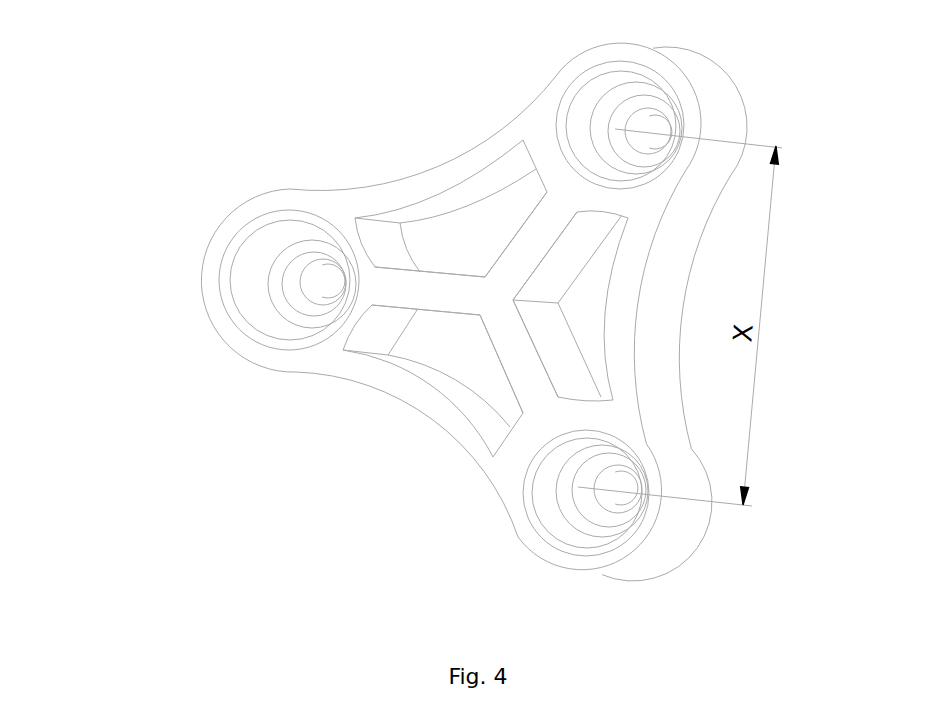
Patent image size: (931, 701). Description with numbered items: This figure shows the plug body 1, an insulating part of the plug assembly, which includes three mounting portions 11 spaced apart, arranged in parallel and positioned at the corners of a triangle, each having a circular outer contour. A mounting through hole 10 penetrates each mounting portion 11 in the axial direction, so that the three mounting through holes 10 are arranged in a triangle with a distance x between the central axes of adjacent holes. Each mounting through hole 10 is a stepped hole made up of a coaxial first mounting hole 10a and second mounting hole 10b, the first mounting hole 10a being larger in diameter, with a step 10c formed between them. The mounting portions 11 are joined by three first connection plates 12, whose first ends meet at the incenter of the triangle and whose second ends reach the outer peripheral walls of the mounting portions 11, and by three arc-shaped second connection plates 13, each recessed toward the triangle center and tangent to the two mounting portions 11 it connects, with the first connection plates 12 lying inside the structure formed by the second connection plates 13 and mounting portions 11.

The plug body 1 is at (345, 52).
The mounting through hole 10 is at (582, 118).
The first mounting hole 10a is at (258, 257).
The second mounting hole 10b is at (328, 282).
The step 10c is at (572, 510).
The mounting portion 11 is at (663, 70).
The first connection plate 12 is at (547, 220).
The second connection plate 13 is at (423, 188).